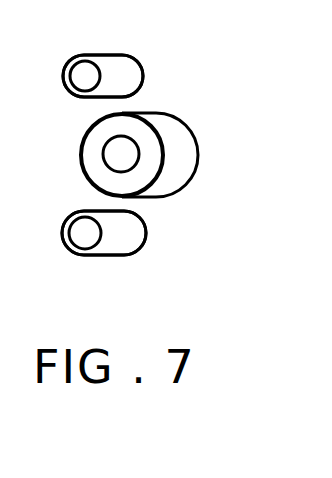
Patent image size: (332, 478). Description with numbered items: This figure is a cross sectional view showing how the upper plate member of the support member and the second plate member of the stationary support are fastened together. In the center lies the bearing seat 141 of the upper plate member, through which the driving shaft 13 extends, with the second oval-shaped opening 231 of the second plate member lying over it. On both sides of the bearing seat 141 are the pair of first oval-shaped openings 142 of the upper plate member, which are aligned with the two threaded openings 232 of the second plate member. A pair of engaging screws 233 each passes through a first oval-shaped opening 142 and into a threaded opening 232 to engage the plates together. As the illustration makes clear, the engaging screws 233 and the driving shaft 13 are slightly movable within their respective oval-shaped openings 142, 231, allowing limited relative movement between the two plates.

The driving shaft 13 is at (117, 160).
The bearing seat 141 is at (98, 135).
The first oval-shaped openings 142 is at (136, 70).
The second oval-shaped opening 231 is at (184, 153).
The threaded openings 232 is at (85, 240).
The engaging screws 233 is at (85, 72).